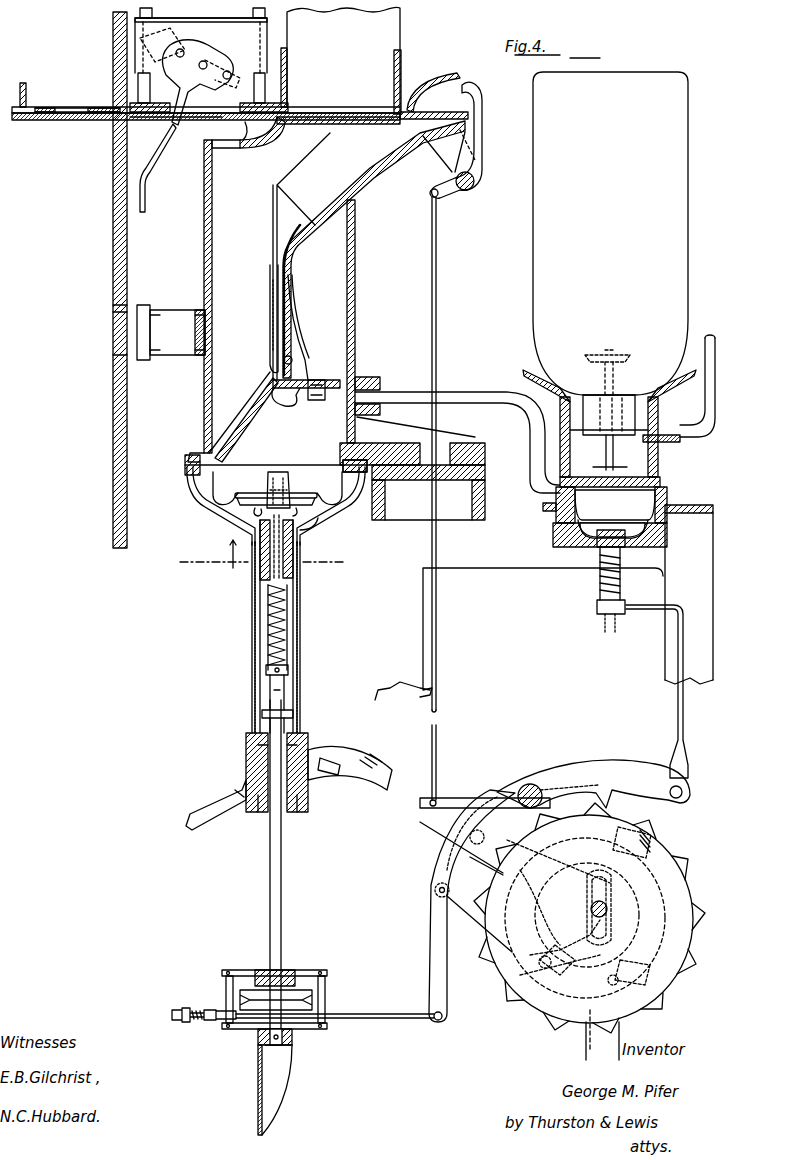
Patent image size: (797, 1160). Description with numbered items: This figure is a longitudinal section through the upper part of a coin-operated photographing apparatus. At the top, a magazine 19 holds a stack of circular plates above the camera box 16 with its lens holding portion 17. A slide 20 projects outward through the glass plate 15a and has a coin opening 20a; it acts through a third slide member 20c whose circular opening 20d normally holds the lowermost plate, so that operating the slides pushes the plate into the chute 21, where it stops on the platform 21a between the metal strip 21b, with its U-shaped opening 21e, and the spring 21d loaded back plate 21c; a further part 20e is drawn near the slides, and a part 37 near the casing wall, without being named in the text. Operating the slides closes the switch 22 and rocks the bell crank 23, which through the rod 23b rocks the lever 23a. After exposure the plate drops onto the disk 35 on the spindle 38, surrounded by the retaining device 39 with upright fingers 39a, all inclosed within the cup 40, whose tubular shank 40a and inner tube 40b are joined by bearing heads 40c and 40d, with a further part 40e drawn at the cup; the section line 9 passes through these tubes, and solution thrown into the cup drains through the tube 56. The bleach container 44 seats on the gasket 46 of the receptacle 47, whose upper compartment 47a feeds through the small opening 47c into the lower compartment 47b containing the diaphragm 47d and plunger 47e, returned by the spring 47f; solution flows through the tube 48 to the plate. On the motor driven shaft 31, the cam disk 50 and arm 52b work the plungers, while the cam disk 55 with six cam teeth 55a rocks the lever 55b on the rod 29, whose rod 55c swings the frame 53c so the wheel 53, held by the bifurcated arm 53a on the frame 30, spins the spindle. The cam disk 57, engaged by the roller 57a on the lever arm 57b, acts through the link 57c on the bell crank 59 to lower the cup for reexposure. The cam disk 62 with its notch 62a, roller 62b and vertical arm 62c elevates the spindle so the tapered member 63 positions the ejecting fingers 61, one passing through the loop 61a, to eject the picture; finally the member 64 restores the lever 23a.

The section line 9— 9 is at (266, 556).
The glass plate 15a is at (113, 460).
The camera box 16 is at (204, 230).
The lens and lens holding portion 17 is at (172, 360).
The magazine 19 is at (341, 60).
The slide 20 is at (35, 107).
The coin opening 20a is at (78, 100).
The third slide member 20c is at (248, 132).
The circular opening 20d is at (308, 117).
The arc guide 20e is at (440, 112).
The chute 21 is at (369, 282).
The platform 21a is at (290, 382).
The metal strip 21b is at (272, 285).
The back plate 21c is at (290, 272).
The spring 21d is at (292, 305).
The U-shaped opening 21e is at (276, 333).
The switch 22 is at (201, 66).
The bell crank 23 is at (481, 148).
The lever 23a is at (455, 798).
The rod 23b is at (437, 697).
The rod 29 is at (531, 784).
The frame 30 is at (714, 612).
The motor driven shaft 31 is at (609, 905).
The disk 35 is at (246, 493).
The lever 37 is at (158, 168).
The spindle 38 is at (282, 848).
The plate retaining device 39 is at (236, 505).
The upright fingers 39a is at (200, 476).
The cup 40 is at (187, 500).
The tubular shank 40a is at (252, 650).
The tube 40b is at (294, 665).
The upper bearing head 40c is at (295, 720).
The lower bearing head 40d is at (258, 778).
The flange 40e is at (310, 535).
The bleach solution container 44 is at (610, 233).
The rubber seal or gasket 46 is at (558, 395).
The receptacle 47 is at (528, 375).
The upper compartment 47a is at (655, 455).
The lower compartment 47b is at (668, 490).
The small opening 47c is at (635, 490).
The flexible diaphragm 47d is at (645, 525).
The plunger 47e is at (596, 628).
The spring 47f is at (598, 582).
The solution carrying tube 48 is at (397, 388).
The cam disk 50 is at (690, 955).
The arm 52b is at (684, 707).
The wheel 53 is at (240, 998).
The bifurcated arm 53a is at (292, 985).
The frame 53c is at (240, 970).
The cam disk 55 is at (668, 925).
The cam teeth 55a is at (700, 885).
The lever 55b is at (578, 770).
The rod 55c is at (390, 1015).
The drain tube 56 is at (190, 812).
The cam disk 57 is at (640, 1015).
The roller 57a is at (461, 855).
The lever arm 57b is at (445, 870).
The link 57c is at (495, 938).
The bell crank 59 is at (385, 800).
The ejecting fingers 61 is at (335, 518).
The loop 61a is at (290, 500).
The cam disk 62 is at (650, 975).
The peripheral notch 62a is at (615, 960).
The roller 62b is at (608, 980).
The vertical arm 62c is at (586, 1040).
The tapered positioning member 63 is at (272, 1058).
The projecting member 64 is at (652, 838).